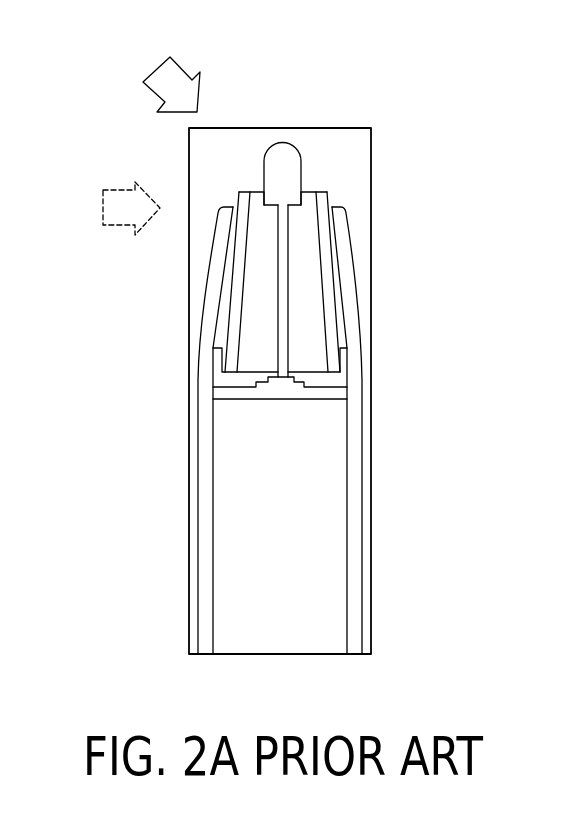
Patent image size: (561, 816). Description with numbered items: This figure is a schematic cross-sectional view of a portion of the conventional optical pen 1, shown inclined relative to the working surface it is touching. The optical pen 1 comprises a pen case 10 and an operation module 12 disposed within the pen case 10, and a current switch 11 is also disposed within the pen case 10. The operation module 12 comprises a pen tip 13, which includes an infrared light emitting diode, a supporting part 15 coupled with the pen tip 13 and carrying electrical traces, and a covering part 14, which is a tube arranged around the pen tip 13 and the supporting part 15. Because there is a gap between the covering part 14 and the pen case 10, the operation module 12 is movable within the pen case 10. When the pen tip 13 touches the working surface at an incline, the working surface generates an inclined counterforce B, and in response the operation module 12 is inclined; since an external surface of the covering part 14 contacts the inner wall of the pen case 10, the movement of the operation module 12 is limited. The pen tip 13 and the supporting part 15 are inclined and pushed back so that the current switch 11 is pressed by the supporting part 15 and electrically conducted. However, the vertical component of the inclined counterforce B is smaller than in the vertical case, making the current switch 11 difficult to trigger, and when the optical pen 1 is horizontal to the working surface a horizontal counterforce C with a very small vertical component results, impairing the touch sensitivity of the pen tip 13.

The optical pen 1 is at (223, 190).
The pen case 10 is at (217, 270).
The current switch 11 is at (282, 385).
The operation module 12 is at (366, 233).
The pen tip 13 is at (287, 170).
The covering part 14 is at (323, 213).
The supporting part 15 is at (359, 291).
The inclined counterforce B is at (165, 78).
The horizontal counterforce C is at (117, 208).